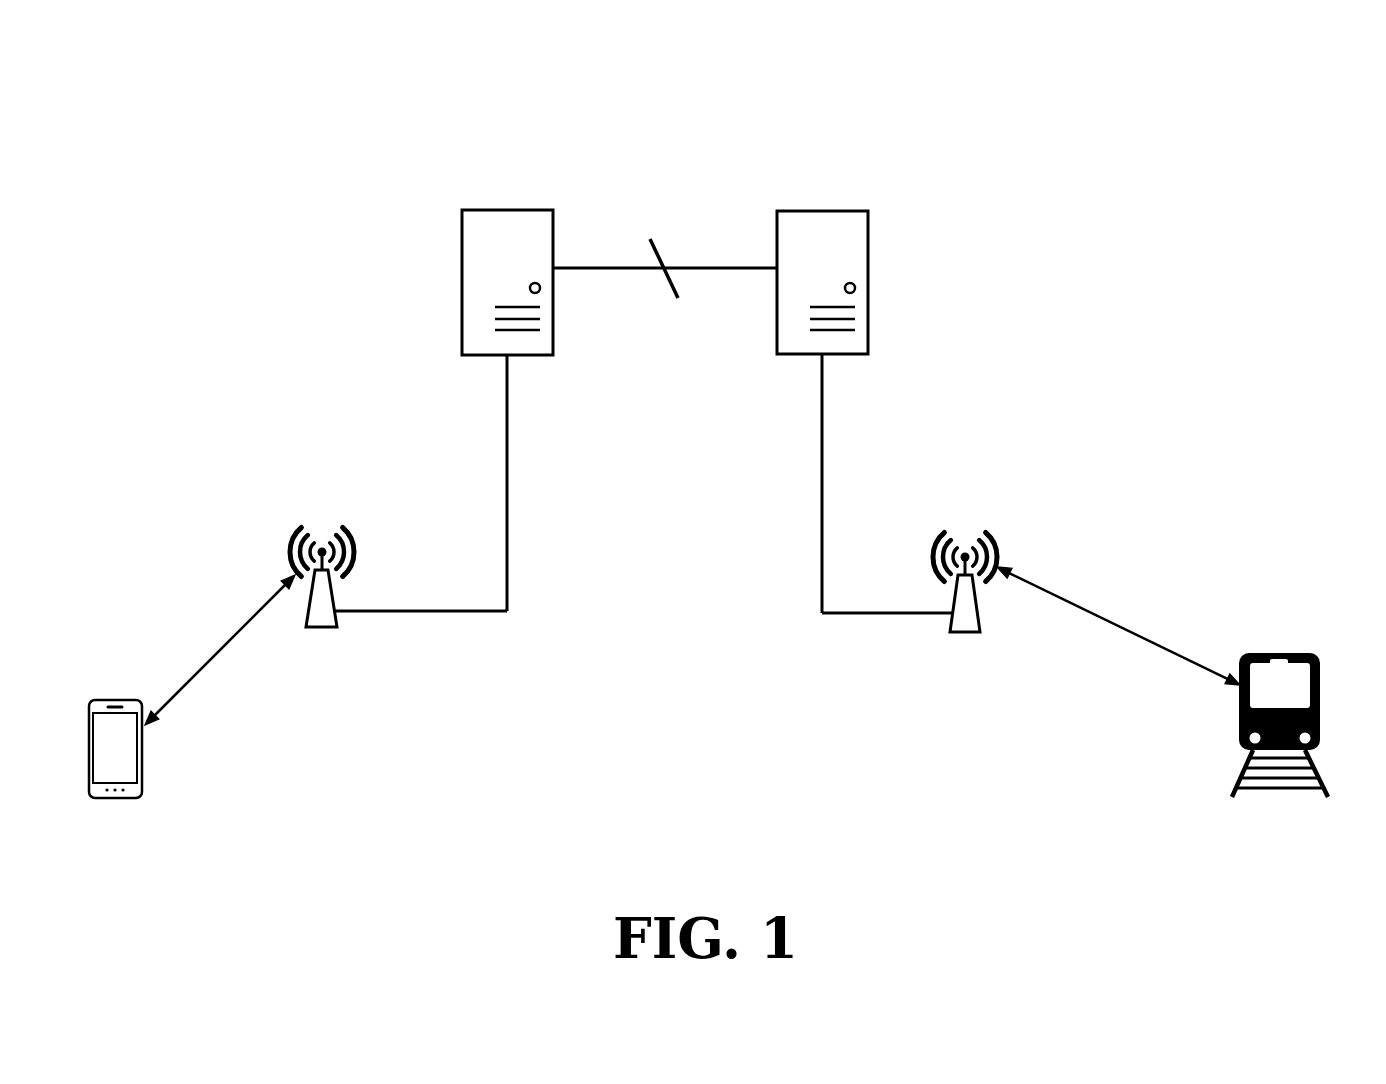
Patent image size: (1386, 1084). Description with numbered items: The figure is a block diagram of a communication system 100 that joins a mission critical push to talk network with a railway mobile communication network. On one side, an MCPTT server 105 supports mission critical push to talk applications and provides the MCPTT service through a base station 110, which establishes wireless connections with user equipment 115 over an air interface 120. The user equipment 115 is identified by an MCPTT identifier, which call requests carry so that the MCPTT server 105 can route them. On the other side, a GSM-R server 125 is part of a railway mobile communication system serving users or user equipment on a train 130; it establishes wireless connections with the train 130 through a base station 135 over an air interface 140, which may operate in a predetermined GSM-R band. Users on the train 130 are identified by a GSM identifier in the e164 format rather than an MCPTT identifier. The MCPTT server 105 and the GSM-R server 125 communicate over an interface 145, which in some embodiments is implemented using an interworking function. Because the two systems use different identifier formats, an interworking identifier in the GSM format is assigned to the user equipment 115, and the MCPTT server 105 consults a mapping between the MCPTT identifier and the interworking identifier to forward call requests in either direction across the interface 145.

The communication system 100 is at (1226, 94).
The MCPTT server 105 is at (507, 210).
The base station 110 is at (320, 628).
The user equipment 115 is at (117, 799).
The air interface 120 is at (215, 650).
The GSM-R server 125 is at (822, 211).
The train 130 is at (1320, 697).
The base station 135 is at (967, 633).
The air interface 140 is at (1123, 628).
The interface 145 is at (660, 250).